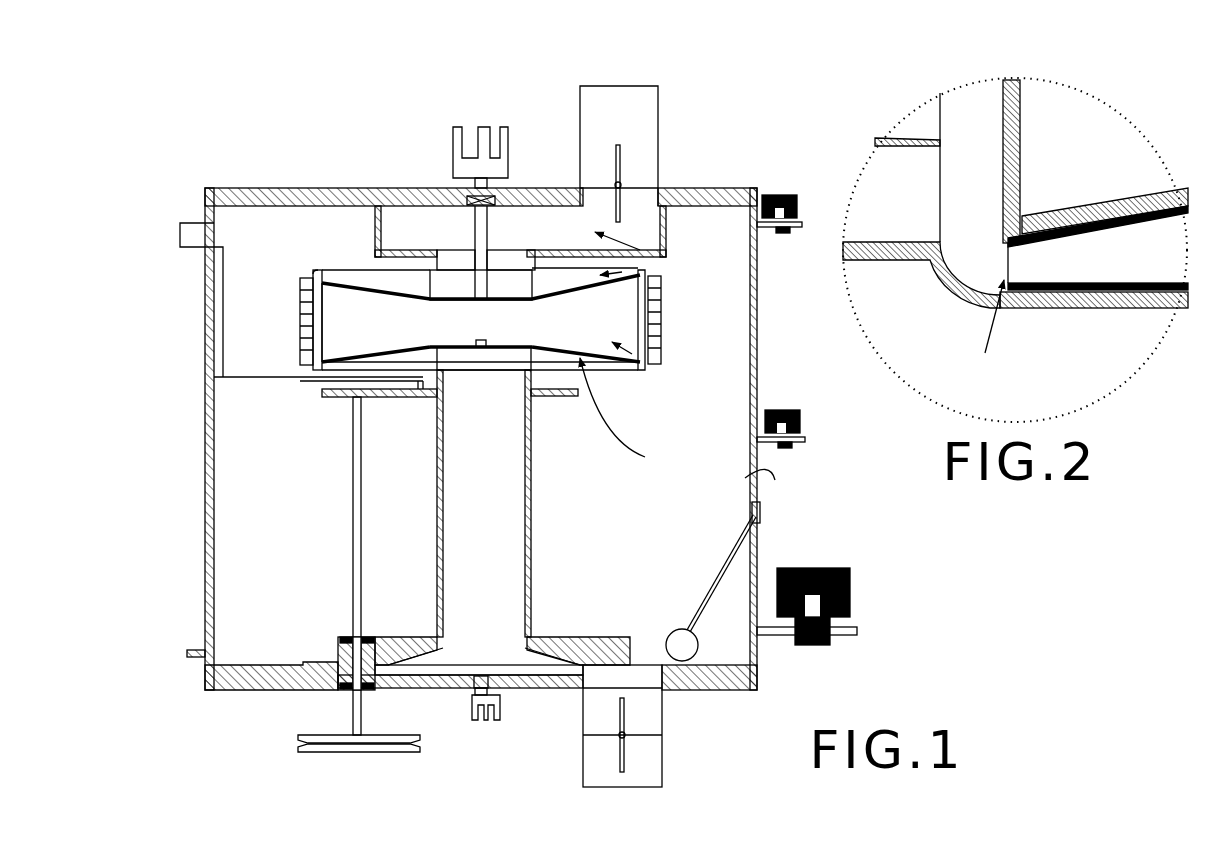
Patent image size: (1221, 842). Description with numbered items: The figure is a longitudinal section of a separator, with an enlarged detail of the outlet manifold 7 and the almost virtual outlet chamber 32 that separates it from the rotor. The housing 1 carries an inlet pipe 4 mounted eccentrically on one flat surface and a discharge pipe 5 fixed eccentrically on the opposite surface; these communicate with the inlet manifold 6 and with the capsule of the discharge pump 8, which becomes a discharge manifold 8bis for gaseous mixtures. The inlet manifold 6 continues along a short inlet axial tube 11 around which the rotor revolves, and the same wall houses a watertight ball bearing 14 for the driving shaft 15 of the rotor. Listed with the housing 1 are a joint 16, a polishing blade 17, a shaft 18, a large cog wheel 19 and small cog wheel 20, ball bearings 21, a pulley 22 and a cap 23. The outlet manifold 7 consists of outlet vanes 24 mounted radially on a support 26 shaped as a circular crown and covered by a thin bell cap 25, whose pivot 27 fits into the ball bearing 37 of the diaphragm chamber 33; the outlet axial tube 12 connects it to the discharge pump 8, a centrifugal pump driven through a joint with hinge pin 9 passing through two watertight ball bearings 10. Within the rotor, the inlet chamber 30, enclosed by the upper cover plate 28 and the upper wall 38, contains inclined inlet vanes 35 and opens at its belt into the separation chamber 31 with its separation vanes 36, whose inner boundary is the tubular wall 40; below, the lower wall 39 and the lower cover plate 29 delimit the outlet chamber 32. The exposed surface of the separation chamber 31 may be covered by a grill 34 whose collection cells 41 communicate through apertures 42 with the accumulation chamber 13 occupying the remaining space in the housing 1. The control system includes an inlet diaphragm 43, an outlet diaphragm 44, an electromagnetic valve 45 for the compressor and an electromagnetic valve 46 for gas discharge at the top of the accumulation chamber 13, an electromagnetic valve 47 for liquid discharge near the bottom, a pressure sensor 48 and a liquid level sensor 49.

In FIG. 1, the housing 1 is at (300, 188).
In FIG. 1, the inlet pipe 4 is at (660, 95).
In FIG. 1, the discharge pipe 5 is at (666, 782).
In FIG. 1, the inlet manifold 6 is at (640, 250).
In FIG. 1, the outlet manifold 7 is at (620, 412).
In FIG. 1, the discharge pump 8 is at (600, 612).
In FIG. 1, the discharge manifold 8bis is at (415, 630).
In FIG. 1, the joint with hinge pin 9 is at (502, 712).
In FIG. 1, the ball bearings 10 is at (460, 678).
In FIG. 1, the inlet axial tube 11 is at (445, 258).
In FIG. 1, the outlet axial tube 12 is at (535, 512).
In FIG. 1, the accumulation chamber 13 is at (712, 398).
In FIG. 1, the ball bearing 14 is at (520, 190).
In FIG. 1, the driving shaft 15 is at (475, 225).
In FIG. 1, the joint 16 is at (453, 152).
In FIG. 1, the polishing blade 17 is at (215, 325).
In FIG. 1, the shaft 18 is at (365, 515).
In FIG. 1, the large cog wheel 19 is at (420, 400).
In FIG. 1, the small cog wheel 20 is at (330, 400).
In FIG. 1, the ball bearings 21 is at (350, 660).
In FIG. 1, the pulley 22 is at (300, 748).
In FIG. 1, the cap 23 is at (197, 650).
In FIG. 1, the outlet vanes 24 is at (400, 352).
In FIG. 2, the outlet vanes 24 is at (1035, 268).
In FIG. 1, the bell cap 25 is at (340, 358).
In FIG. 2, the bell cap 25 is at (1120, 200).
In FIG. 1, the support 26 is at (445, 362).
In FIG. 2, the support 26 is at (1068, 302).
In FIG. 1, the pivot 27 is at (480, 340).
In FIG. 1, the upper cover plate 28 is at (378, 272).
In FIG. 1, the lower cover plate 29 is at (300, 370).
In FIG. 2, the lower cover plate 29 is at (958, 282).
In FIG. 1, the inlet chamber 30 is at (650, 274).
In FIG. 1, the separation chamber 31 is at (652, 292).
In FIG. 2, the outlet chamber 32 is at (987, 331).
In FIG. 1, the diaphragm chamber 33 is at (655, 358).
In FIG. 1, the grill 34 is at (302, 290).
In FIG. 1, the inlet vanes 35 is at (345, 278).
In FIG. 1, the separation vanes 36 is at (305, 310).
In FIG. 2, the separation vanes 36 is at (978, 193).
In FIG. 1, the ball bearing 37 is at (490, 340).
In FIG. 1, the upper wall 38 is at (362, 290).
In FIG. 1, the lower wall 39 is at (410, 345).
In FIG. 2, the lower wall 39 is at (1040, 225).
In FIG. 1, the tubular wall 40 is at (322, 315).
In FIG. 1, the collection cells 41 is at (662, 300).
In FIG. 1, the apertures 42 is at (661, 314).
In FIG. 1, the electromechanical inlet diaphragm 43 is at (614, 165).
In FIG. 1, the electromechanical outlet diaphragm 44 is at (630, 748).
In FIG. 1, the electromagnetic valve for the compressor 45 is at (790, 448).
In FIG. 1, the electromagnetic valve for gas discharge 46 is at (785, 235).
In FIG. 1, the electromagnetic valve for liquid discharge 47 is at (822, 568).
In FIG. 1, the pressure sensor 48 is at (195, 250).
In FIG. 1, the liquid level sensor 49 is at (760, 528).